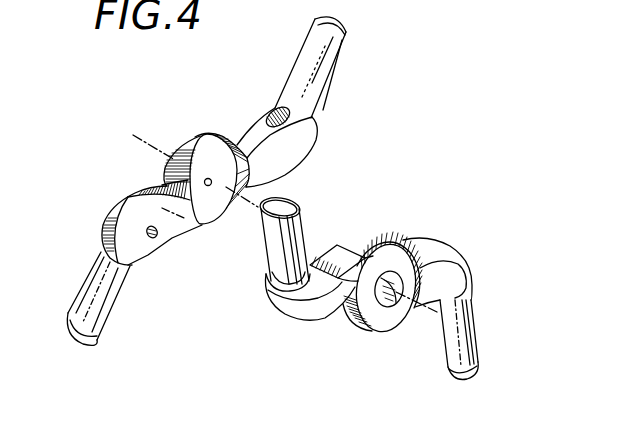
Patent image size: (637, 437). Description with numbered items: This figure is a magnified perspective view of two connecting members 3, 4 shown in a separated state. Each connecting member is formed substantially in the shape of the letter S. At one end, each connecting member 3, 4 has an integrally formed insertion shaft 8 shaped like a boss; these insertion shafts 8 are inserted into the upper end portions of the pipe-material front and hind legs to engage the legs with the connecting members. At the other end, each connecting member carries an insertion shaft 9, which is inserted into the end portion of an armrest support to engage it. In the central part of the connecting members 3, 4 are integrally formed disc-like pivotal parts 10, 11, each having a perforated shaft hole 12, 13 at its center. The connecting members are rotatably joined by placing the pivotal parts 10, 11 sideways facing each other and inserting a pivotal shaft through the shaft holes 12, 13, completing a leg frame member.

The connecting member 3 is at (127, 197).
The connecting member 4 is at (450, 247).
The insertion shaft 8 is at (82, 298).
The insertion shaft 9 is at (330, 50).
The pivotal part 10 is at (198, 146).
The pivotal part 11 is at (367, 252).
The shaft hole 12 is at (209, 186).
The shaft hole 13 is at (384, 310).